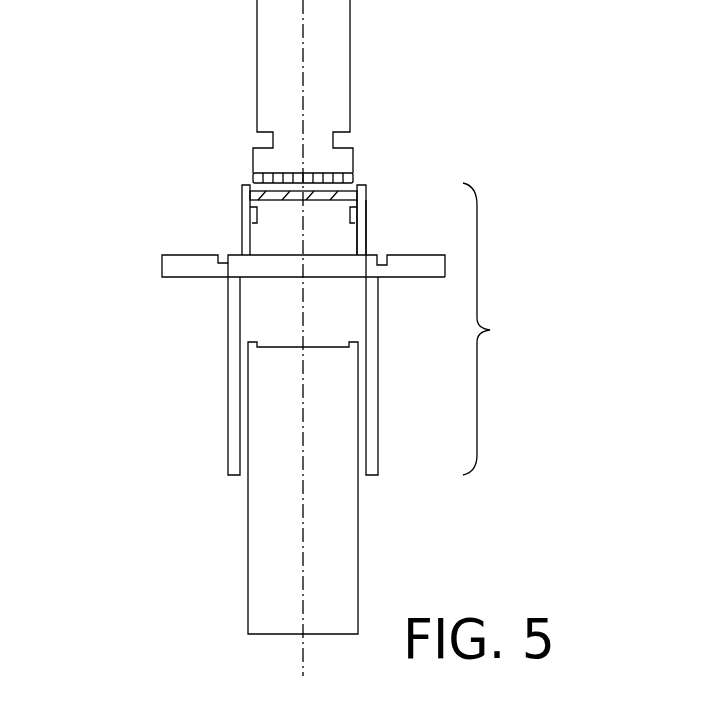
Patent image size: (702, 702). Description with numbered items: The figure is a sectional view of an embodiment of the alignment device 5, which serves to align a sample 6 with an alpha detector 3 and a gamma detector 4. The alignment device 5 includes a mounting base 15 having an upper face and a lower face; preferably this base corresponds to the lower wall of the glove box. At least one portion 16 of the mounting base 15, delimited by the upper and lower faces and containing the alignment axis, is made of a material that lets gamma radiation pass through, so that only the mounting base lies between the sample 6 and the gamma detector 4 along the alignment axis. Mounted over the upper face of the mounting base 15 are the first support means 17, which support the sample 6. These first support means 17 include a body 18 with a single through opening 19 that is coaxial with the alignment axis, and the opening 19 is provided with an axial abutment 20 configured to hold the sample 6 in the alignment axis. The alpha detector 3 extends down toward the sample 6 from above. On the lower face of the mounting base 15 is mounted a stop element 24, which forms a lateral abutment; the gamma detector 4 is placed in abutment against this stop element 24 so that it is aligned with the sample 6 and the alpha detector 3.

The alpha detector 3 is at (330, 63).
The gamma detector 4 is at (268, 507).
The alignment device 5 is at (488, 329).
The sample 6 is at (289, 172).
The mounting base 15 is at (152, 263).
The portion of the mounting base 16 is at (272, 267).
The first support means 17 is at (215, 222).
The body 18 is at (370, 216).
The opening 19 is at (319, 221).
The axial abutment 20 is at (253, 224).
The stop element 24 is at (229, 398).